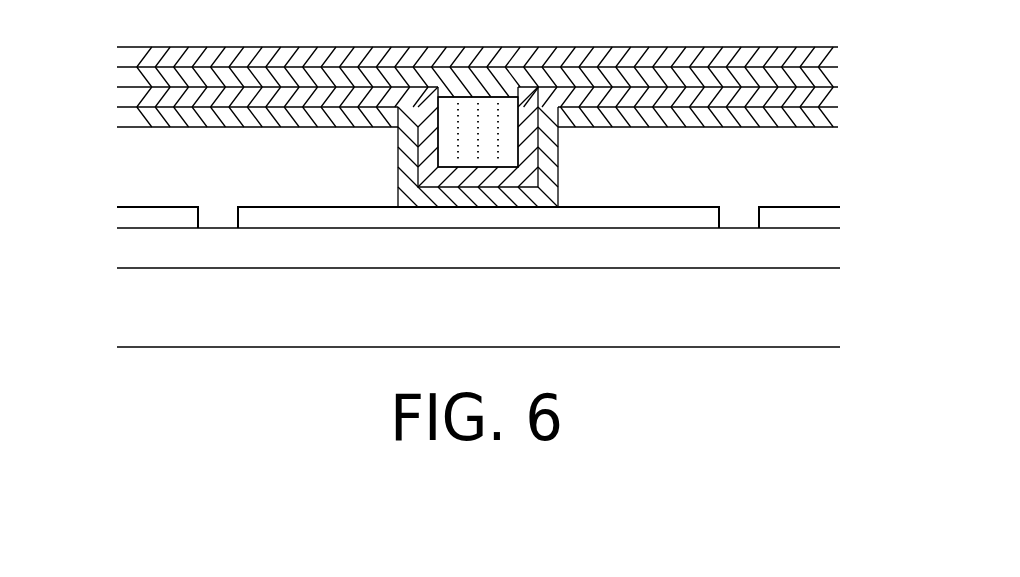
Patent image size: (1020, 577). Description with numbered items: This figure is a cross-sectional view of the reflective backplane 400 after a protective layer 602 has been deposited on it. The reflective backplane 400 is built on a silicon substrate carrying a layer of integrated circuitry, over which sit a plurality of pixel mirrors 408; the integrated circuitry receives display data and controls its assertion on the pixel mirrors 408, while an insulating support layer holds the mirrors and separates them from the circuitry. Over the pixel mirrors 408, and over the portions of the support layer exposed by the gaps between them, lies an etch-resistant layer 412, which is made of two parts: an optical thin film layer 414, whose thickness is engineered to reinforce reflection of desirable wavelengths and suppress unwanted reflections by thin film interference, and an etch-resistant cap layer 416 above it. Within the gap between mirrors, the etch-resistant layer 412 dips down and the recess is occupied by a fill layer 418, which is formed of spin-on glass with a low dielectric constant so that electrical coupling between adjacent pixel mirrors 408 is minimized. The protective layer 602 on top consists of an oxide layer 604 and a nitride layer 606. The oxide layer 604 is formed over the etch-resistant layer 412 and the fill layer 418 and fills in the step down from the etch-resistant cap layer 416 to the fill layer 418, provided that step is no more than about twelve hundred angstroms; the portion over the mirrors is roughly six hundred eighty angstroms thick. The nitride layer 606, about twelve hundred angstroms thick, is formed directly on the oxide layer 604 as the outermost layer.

The reflective backplane 400 is at (753, 406).
The pixel mirrors 408 is at (135, 172).
The etch-resistant layer 412 is at (107, 87).
The optical thin film layer 414 is at (830, 118).
The etch-resistant cap layer 416 is at (830, 100).
The fill layer 418 is at (508, 142).
The protective layer 602 is at (107, 45).
The oxide layer 604 is at (830, 77).
The nitride layer 606 is at (830, 57).